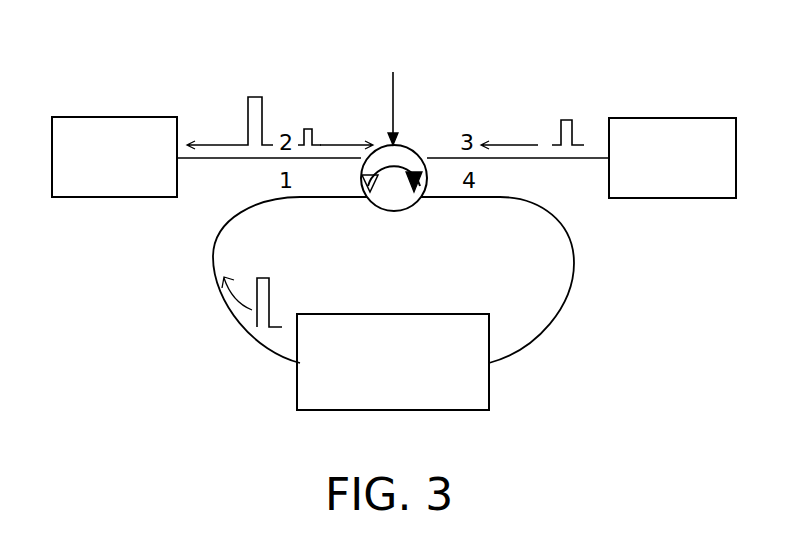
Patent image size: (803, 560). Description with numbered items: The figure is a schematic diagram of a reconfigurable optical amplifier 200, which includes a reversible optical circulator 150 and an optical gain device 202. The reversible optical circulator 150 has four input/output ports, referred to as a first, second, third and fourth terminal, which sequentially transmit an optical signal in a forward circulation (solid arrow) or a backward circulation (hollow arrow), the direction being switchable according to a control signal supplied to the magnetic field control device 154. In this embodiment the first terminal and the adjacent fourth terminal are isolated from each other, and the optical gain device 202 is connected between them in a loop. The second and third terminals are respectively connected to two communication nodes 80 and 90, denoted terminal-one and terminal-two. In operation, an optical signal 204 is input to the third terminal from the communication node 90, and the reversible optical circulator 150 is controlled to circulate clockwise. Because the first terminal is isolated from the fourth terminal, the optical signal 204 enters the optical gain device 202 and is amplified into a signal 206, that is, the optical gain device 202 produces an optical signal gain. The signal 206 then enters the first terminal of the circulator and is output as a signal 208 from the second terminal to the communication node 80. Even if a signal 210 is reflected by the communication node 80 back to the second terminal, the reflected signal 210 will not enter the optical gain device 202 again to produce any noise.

The communication node 80 is at (120, 117).
The communication node 90 is at (665, 118).
The reversible optical circulator 150 is at (412, 146).
The magnetic field control device 154 is at (394, 85).
The reconfigurable optical amplifier 200 is at (603, 285).
The optical gain device 202 is at (489, 390).
The optical signal 204 is at (567, 120).
The signal 206 is at (263, 278).
The signal 208 is at (255, 97).
The reflected signal 210 is at (308, 128).